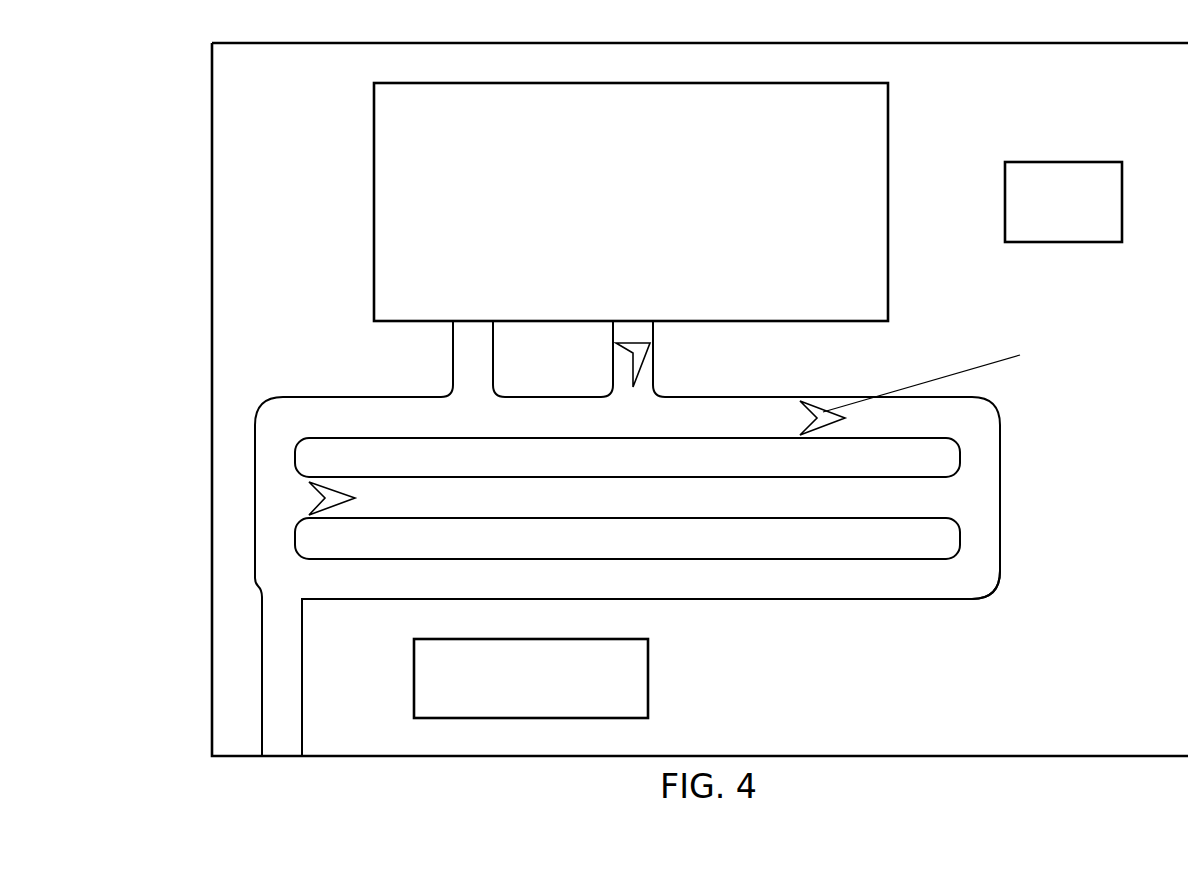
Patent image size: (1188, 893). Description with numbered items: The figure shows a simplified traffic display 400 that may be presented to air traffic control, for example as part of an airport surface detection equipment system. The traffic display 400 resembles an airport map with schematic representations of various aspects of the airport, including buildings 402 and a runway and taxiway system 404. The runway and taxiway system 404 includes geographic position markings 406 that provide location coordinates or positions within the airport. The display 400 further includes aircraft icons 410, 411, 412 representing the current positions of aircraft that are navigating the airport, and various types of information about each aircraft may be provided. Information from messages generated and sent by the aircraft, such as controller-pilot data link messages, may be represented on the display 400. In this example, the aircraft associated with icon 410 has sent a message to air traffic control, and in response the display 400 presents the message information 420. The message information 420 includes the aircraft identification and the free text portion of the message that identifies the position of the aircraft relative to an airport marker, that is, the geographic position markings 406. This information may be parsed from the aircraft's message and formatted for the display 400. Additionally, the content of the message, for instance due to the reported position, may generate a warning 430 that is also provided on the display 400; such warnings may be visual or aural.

The traffic display 400 is at (203, 59).
The buildings 402 is at (374, 181).
The runway and taxiway system 404 is at (318, 397).
The geographic position markings 406 is at (905, 599).
The aircraft icon 410 is at (820, 432).
The aircraft icon 411 is at (650, 360).
The aircraft icon 412 is at (350, 503).
The message information 420 is at (1103, 353).
The warning 430 is at (1030, 82).